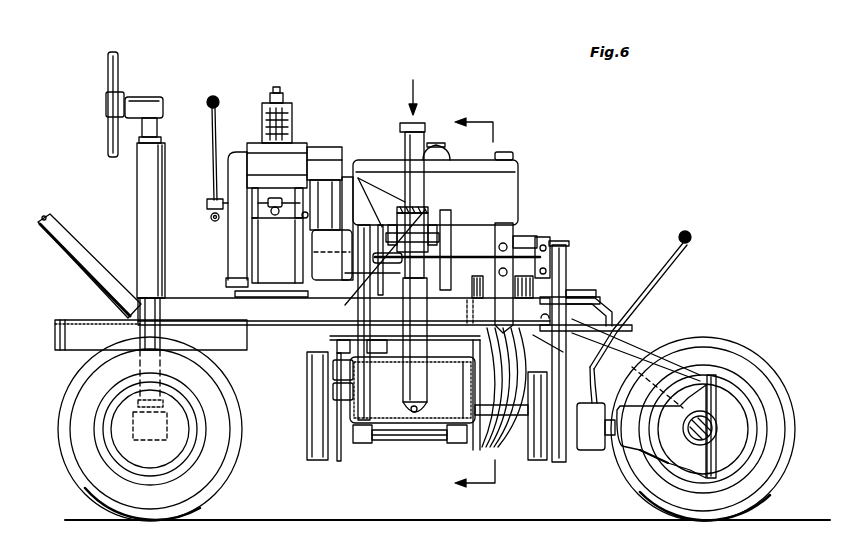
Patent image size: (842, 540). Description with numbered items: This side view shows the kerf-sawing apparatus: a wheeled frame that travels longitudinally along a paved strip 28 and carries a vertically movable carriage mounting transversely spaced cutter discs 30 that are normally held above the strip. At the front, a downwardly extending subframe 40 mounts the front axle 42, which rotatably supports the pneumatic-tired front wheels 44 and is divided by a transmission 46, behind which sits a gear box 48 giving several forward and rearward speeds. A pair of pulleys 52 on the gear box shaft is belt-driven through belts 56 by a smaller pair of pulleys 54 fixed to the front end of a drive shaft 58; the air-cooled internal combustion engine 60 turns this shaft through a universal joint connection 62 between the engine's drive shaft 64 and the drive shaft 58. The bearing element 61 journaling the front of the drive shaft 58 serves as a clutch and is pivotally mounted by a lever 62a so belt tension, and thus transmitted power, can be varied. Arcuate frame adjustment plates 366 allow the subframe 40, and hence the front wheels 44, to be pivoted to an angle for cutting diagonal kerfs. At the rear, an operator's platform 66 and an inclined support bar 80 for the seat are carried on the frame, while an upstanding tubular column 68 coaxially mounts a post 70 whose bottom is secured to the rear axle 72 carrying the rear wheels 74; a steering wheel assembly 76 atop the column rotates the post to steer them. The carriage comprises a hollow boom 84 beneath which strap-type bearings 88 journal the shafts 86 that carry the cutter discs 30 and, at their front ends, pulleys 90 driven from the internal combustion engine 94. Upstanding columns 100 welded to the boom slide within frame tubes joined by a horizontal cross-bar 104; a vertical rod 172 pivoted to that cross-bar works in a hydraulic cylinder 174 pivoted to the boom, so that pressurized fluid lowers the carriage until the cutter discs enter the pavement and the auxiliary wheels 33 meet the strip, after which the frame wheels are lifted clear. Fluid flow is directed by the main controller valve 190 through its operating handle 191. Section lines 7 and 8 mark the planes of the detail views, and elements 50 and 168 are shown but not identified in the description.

The section line 7 is at (421, 97).
The section line 8 is at (475, 303).
The paved strip 28 is at (300, 497).
The cutter discs 30 is at (341, 470).
The auxiliary wheels 33 is at (315, 462).
The subframe 40 is at (642, 340).
The front axle 42 is at (716, 418).
The front wheels 44 is at (733, 352).
The transmission 46 is at (663, 447).
The gear box 48 is at (634, 367).
The steering lever 50 is at (672, 270).
The pulleys 52 is at (578, 452).
The pulleys 54 is at (575, 248).
The belts 56 is at (576, 301).
The drive shaft 58 is at (500, 248).
The internal combustion engine 60 is at (317, 146).
The bearing element 61 is at (556, 244).
The universal joint connection 62 is at (438, 230).
The lever 62a is at (532, 238).
The drive shaft of the engine 64 is at (412, 208).
The operator's platform 66 is at (65, 320).
The tubular column 68 is at (136, 196).
The post 70 is at (153, 310).
The rear axle 72 is at (165, 425).
The rear wheels 74 is at (212, 490).
The steering wheel assembly 76 is at (119, 64).
The inclined support bar 80 is at (84, 270).
The boom 84 is at (348, 393).
The shaft 86 is at (411, 442).
The strap-type bearings 88 is at (360, 445).
The pulleys 90 is at (497, 452).
The internal combustion engine 94 is at (492, 166).
The upstanding columns 100 is at (405, 150).
The horizontal cross-bar 104 is at (442, 183).
The pipe cap 168 is at (402, 124).
The vertical rod 172 is at (358, 300).
The hydraulic cylinder 174 is at (430, 277).
The main controller valve 190 is at (208, 205).
The operating handle 191 is at (219, 108).
The frame adjustment plates 366 is at (592, 322).